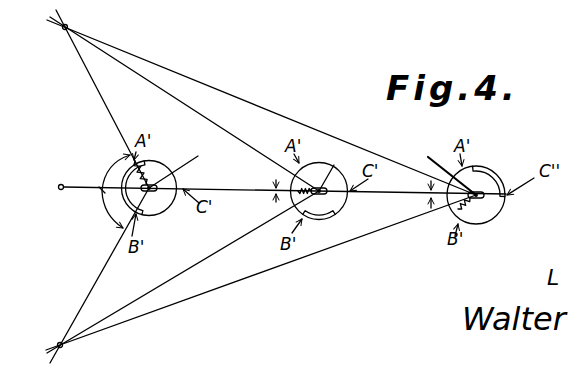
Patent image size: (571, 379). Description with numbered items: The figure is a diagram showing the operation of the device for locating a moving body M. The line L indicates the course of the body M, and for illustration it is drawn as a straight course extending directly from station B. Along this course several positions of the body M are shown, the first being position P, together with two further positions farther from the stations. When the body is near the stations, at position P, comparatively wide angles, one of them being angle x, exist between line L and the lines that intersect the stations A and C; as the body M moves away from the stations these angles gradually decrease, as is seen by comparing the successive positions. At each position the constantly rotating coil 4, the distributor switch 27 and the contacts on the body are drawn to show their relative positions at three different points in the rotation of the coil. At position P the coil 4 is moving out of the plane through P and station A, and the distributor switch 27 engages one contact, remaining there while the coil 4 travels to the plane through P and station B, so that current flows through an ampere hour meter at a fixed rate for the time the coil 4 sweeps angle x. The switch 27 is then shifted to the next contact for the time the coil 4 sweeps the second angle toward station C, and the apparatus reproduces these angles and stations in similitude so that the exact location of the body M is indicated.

The coil 4 is at (151, 171).
The distributor switch 27 is at (123, 196).
The station A is at (256, 102).
The station B is at (271, 198).
The station C is at (255, 275).
The position P is at (157, 201).
The moving body M is at (312, 169).
The line L is at (102, 100).
The angle x is at (265, 191).